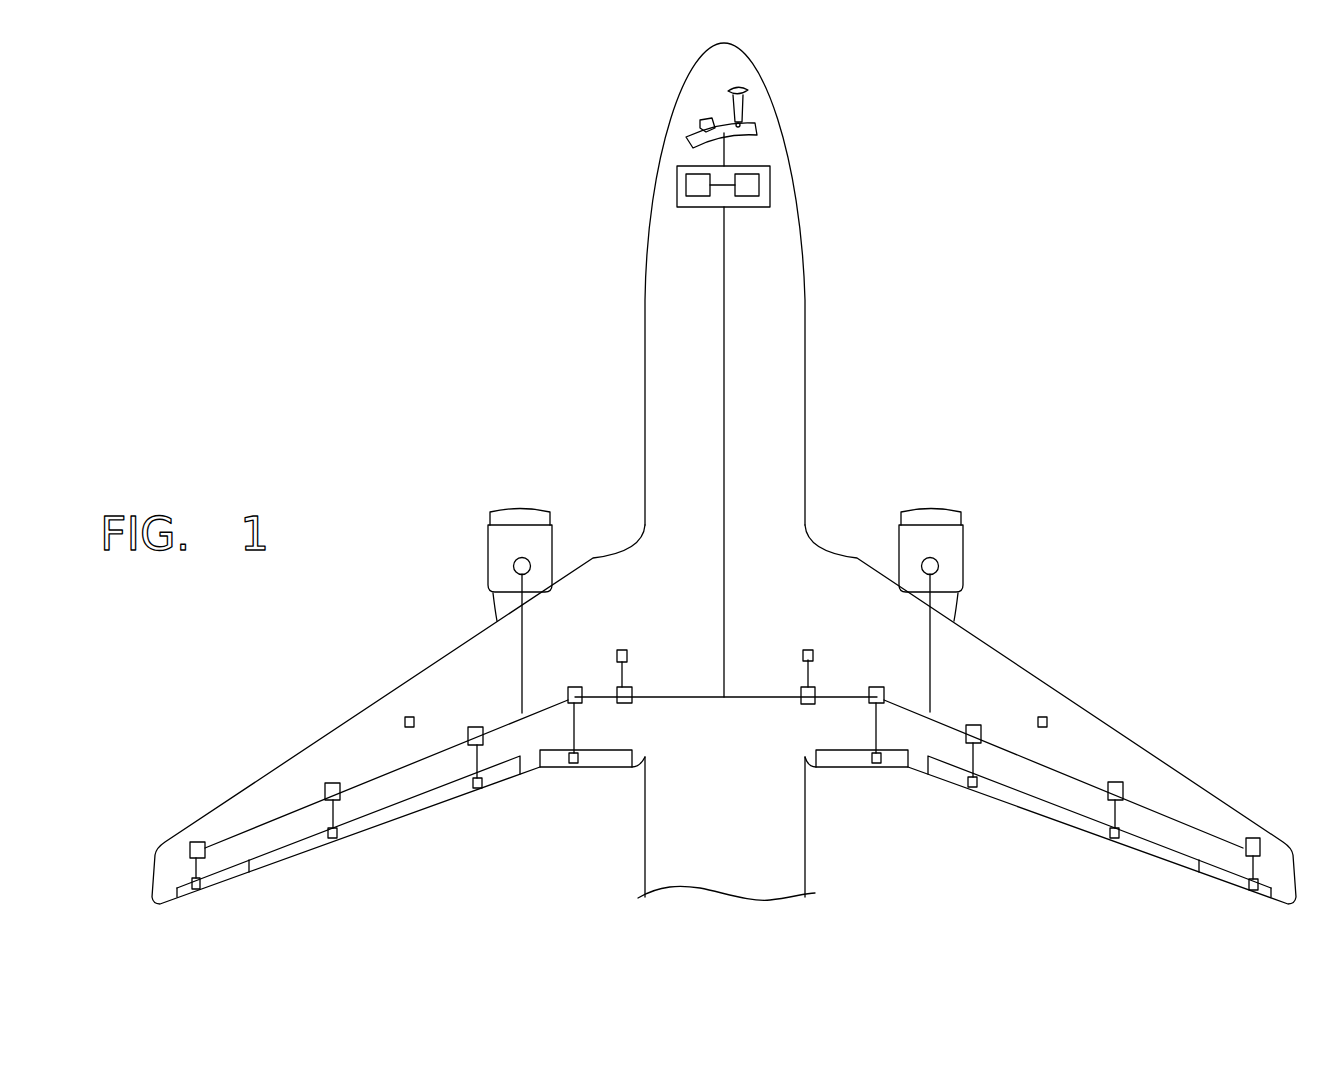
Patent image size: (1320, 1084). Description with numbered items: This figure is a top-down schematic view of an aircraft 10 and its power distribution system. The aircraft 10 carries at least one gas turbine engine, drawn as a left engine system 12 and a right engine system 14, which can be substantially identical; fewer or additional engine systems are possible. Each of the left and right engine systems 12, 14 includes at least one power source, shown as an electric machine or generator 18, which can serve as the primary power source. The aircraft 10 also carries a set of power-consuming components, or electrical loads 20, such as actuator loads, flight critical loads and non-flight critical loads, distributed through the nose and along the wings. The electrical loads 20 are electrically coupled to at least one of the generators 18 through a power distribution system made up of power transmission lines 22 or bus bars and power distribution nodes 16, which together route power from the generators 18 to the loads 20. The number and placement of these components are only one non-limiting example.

The aircraft 10 is at (537, 74).
The left engine system 12 is at (520, 515).
The right engine system 14 is at (943, 518).
The power distribution node 16 is at (205, 853).
The generator 18 is at (532, 560).
The electrical load 20 is at (688, 201).
The power transmission line 22 is at (724, 393).